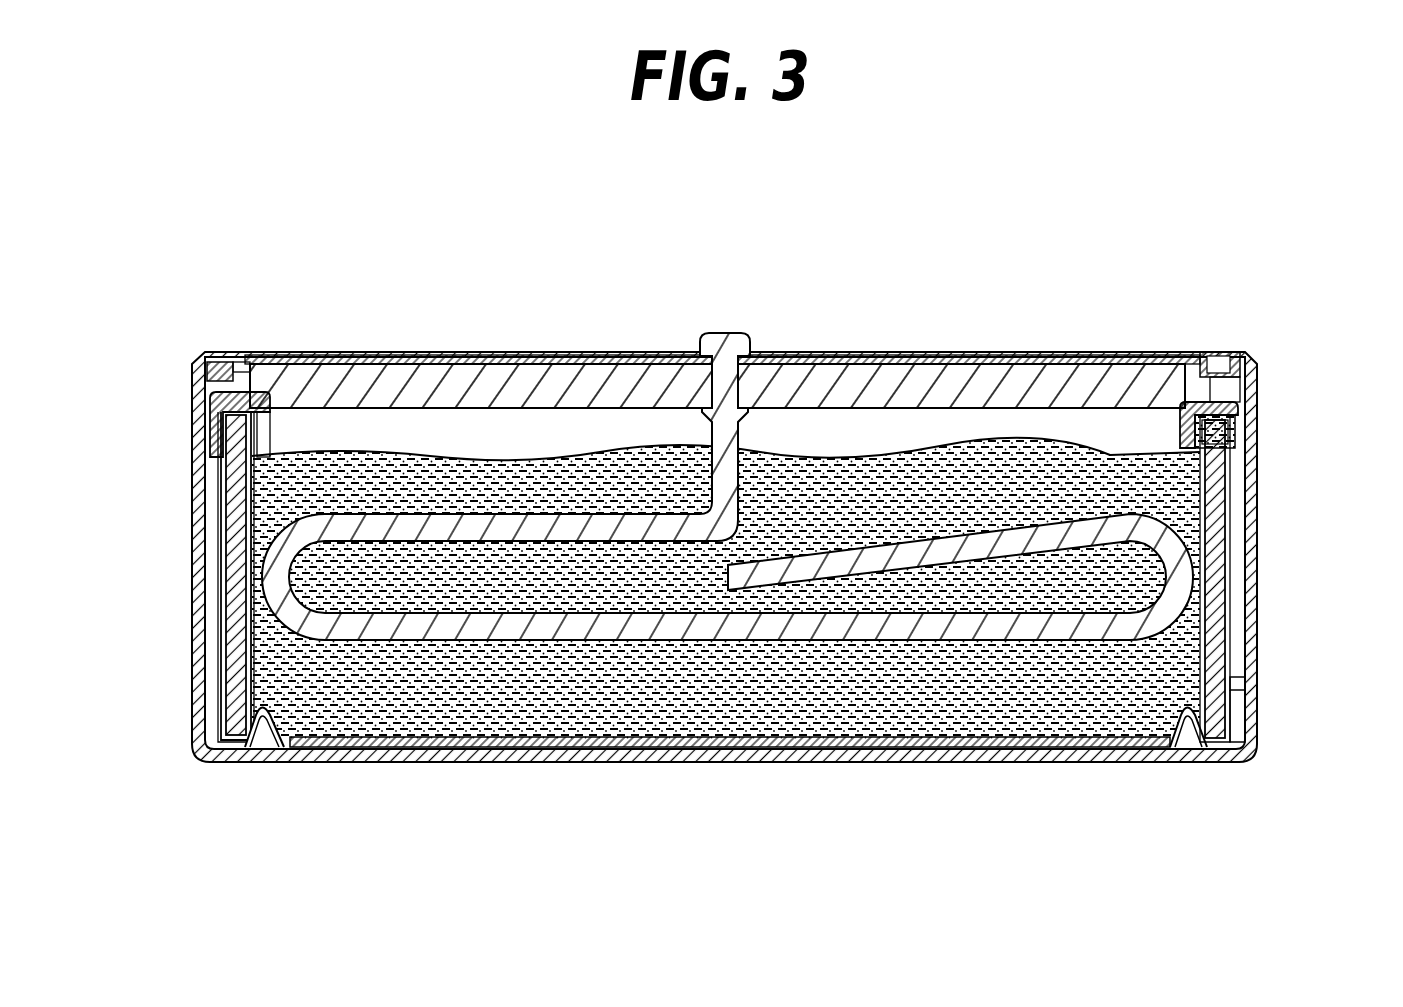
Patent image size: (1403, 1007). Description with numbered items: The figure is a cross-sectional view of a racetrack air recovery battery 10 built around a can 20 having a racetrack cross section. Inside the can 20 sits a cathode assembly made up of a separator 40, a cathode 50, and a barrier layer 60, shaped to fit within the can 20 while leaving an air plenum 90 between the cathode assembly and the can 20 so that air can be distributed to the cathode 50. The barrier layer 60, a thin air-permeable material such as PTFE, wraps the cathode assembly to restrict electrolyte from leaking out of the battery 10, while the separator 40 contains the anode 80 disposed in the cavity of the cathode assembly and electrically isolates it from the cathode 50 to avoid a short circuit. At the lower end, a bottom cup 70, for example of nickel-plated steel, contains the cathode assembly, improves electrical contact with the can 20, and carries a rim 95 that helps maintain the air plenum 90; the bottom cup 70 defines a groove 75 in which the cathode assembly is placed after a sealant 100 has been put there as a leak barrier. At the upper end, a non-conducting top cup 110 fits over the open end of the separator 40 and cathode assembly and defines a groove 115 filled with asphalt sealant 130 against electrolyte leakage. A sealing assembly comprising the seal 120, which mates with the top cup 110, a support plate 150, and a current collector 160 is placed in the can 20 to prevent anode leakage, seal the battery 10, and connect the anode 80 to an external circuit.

The air recovery battery 10 is at (925, 215).
The can 20 is at (468, 762).
The separator 40 is at (712, 740).
The cathode 50 is at (228, 708).
The barrier layer 60 is at (1245, 530).
The bottom cup 70 is at (1190, 748).
The groove 75 is at (1240, 748).
The anode 80 is at (625, 478).
The air plenum 90 is at (205, 545).
The rim 95 is at (1240, 672).
The sealant 100 is at (240, 748).
The top cup 110 is at (280, 390).
The groove 115 is at (1232, 412).
The seal 120 is at (412, 388).
The asphalt sealant 130 is at (1192, 402).
The support plate 150 is at (1038, 352).
The current collector 160 is at (742, 345).